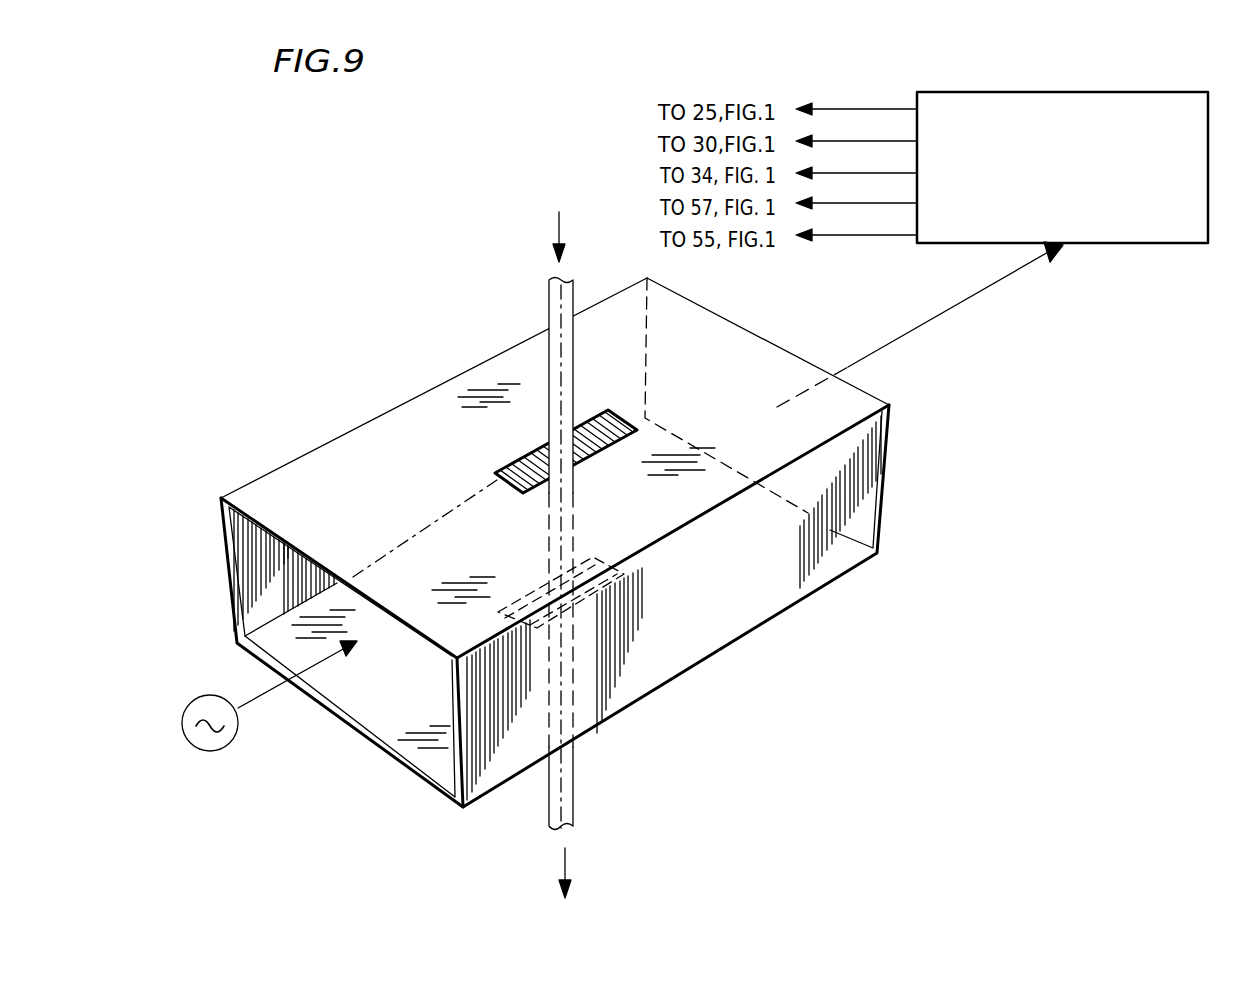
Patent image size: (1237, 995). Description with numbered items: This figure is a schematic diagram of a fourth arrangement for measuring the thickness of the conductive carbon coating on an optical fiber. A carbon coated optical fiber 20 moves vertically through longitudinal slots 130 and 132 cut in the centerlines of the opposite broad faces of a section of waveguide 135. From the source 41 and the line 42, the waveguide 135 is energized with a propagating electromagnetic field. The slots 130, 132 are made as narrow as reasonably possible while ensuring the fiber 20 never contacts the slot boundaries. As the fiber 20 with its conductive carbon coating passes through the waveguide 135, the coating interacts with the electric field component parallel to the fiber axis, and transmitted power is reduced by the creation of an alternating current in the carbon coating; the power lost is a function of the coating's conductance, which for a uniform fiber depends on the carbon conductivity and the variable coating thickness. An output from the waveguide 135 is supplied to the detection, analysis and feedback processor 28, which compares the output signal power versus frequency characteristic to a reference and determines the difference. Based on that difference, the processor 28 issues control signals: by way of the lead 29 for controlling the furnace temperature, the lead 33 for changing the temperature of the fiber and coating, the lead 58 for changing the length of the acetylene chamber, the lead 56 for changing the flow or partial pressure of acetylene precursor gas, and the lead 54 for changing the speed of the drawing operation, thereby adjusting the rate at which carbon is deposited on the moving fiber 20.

The fiber 20 is at (580, 298).
The detection, analysis and feedback processor 28 is at (1146, 94).
The lead 29 is at (836, 106).
The lead 33 is at (856, 140).
The source 41 is at (197, 704).
The line 42 is at (258, 698).
The lead 54 is at (876, 237).
The lead 56 is at (870, 204).
The lead 58 is at (870, 172).
The longitudinal slot 130 is at (634, 431).
The longitudinal slot 132 is at (624, 578).
The waveguide 135 is at (332, 450).